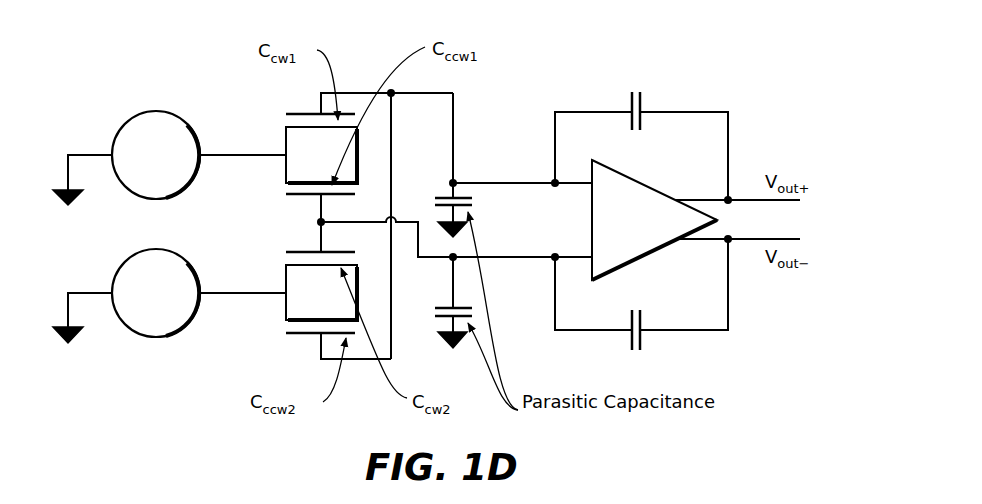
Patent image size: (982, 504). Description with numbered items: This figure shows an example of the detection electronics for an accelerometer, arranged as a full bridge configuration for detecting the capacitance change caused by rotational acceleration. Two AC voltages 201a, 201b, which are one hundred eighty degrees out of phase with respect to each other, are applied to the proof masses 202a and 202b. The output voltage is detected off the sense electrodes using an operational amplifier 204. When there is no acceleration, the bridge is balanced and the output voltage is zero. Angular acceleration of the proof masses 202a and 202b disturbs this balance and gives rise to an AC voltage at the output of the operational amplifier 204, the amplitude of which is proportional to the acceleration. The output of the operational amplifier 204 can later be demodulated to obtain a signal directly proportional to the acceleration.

The AC voltage 201a is at (170, 177).
The AC voltage 201b is at (158, 327).
The proof mass 202a is at (280, 134).
The proof mass 202b is at (280, 308).
The operational amplifier 204 is at (640, 180).